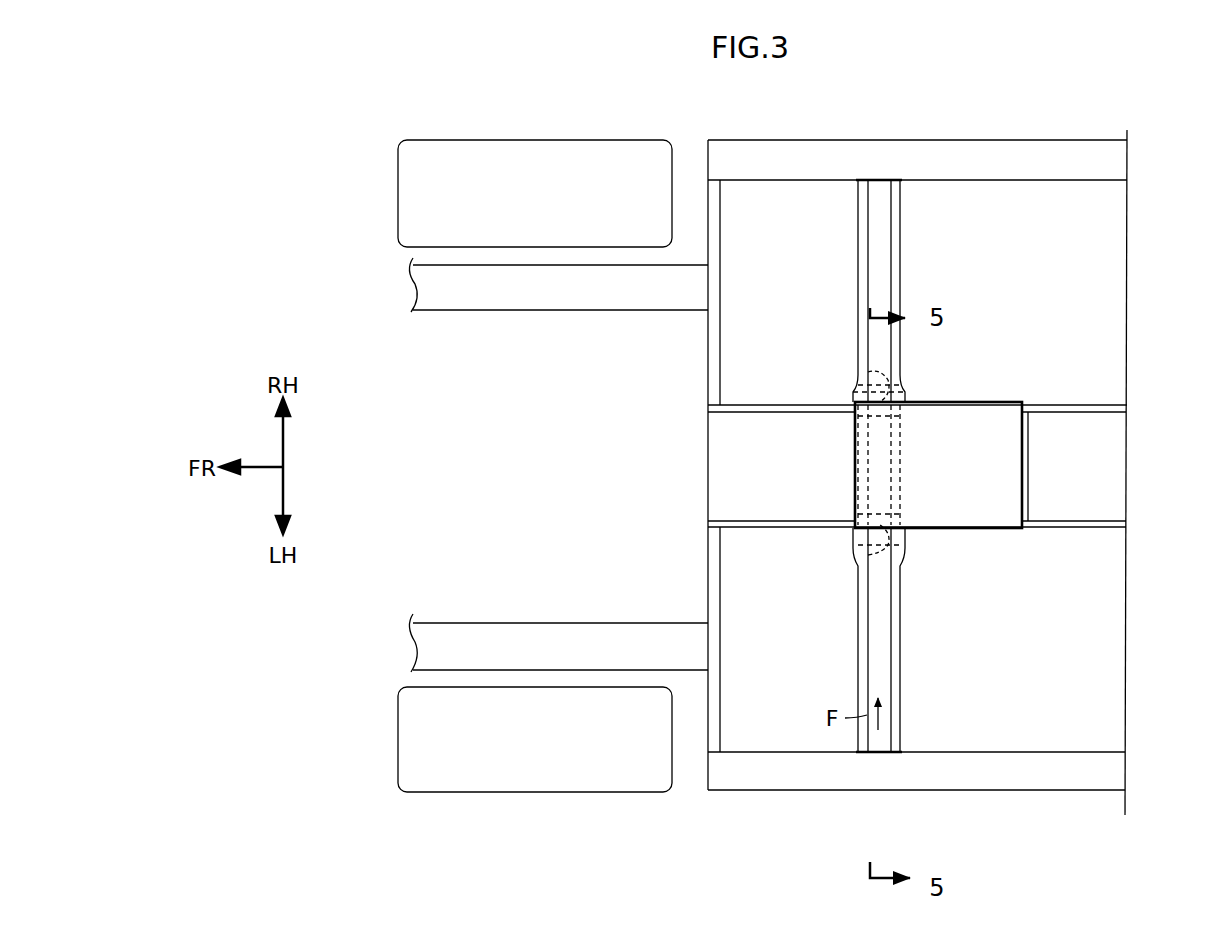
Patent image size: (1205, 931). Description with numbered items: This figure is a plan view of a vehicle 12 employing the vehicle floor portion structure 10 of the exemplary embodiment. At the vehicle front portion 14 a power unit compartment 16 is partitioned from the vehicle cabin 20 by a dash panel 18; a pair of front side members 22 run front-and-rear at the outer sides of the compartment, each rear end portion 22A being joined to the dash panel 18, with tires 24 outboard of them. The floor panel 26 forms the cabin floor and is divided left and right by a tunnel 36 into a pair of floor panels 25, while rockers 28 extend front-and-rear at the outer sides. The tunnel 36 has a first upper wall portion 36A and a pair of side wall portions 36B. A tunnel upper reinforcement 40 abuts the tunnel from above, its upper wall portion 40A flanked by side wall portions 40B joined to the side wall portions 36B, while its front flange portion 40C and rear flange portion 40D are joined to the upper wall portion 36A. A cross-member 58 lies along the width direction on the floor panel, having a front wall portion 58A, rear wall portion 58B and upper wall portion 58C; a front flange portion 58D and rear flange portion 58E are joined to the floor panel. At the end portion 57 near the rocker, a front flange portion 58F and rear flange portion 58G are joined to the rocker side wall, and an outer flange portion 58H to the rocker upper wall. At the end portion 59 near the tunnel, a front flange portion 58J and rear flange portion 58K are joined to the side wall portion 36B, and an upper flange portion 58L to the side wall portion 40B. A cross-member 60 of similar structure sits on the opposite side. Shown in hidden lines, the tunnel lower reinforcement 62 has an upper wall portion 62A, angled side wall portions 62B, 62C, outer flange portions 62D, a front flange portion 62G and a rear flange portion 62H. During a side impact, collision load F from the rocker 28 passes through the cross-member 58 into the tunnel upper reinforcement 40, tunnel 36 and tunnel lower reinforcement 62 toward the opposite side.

The vehicle floor portion structure 10 is at (936, 394).
The vehicle 12 is at (1105, 98).
The vehicle front portion 14 is at (664, 128).
The power unit compartment 16 is at (520, 481).
The dash panel 18 is at (708, 569).
The vehicle cabin 20 is at (1025, 288).
The front side member 22 is at (490, 310).
The rear end portion 22A is at (708, 296).
The tire 24 is at (530, 144).
The floor panel 25 is at (1128, 251).
The floor panel 26 is at (1133, 306).
The rocker 28 is at (1016, 138).
The tunnel 36 is at (1133, 446).
The upper wall portion 36A is at (1126, 490).
The side wall portion 36B is at (1082, 404).
The tunnel upper reinforcement 40 is at (1000, 400).
The upper wall portion 40A is at (1026, 442).
The side wall portion 40B is at (1000, 530).
The front flange portion 40C is at (854, 476).
The rear flange portion 40D is at (1030, 484).
The end portion 57 is at (880, 180).
The cross-member 58 is at (904, 652).
The front wall portion 58A is at (866, 288).
The rear wall portion 58B is at (892, 296).
The upper wall portion 58C is at (892, 200).
The front flange portion 58D is at (858, 244).
The rear flange portion 58E is at (900, 265).
The front flange portion 58F is at (860, 180).
The rear flange portion 58G is at (895, 180).
The outer flange portion 58H is at (870, 180).
The front flange portion 58J is at (858, 542).
The rear flange portion 58K is at (905, 545).
The upper flange portion 58L is at (860, 512).
The end portion 59 is at (860, 385).
The cross-member 60 is at (902, 235).
The tunnel lower reinforcement 62 is at (904, 422).
The upper wall portion 62A is at (880, 452).
The side wall portion 62B is at (900, 494).
The side wall portion 62C is at (854, 418).
The outer flange portion 62D is at (876, 382).
The front flange portion 62G is at (856, 440).
The rear flange portion 62H is at (905, 510).